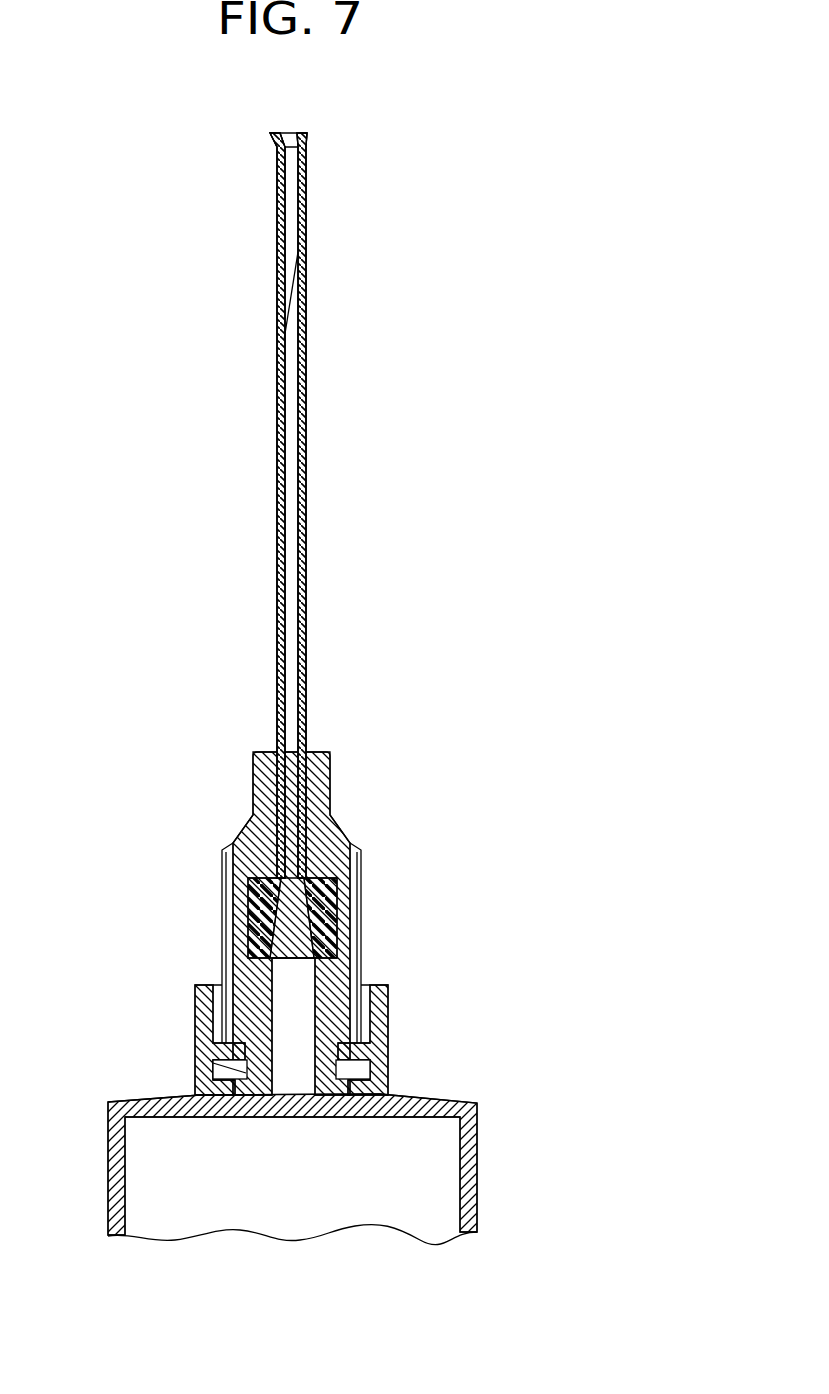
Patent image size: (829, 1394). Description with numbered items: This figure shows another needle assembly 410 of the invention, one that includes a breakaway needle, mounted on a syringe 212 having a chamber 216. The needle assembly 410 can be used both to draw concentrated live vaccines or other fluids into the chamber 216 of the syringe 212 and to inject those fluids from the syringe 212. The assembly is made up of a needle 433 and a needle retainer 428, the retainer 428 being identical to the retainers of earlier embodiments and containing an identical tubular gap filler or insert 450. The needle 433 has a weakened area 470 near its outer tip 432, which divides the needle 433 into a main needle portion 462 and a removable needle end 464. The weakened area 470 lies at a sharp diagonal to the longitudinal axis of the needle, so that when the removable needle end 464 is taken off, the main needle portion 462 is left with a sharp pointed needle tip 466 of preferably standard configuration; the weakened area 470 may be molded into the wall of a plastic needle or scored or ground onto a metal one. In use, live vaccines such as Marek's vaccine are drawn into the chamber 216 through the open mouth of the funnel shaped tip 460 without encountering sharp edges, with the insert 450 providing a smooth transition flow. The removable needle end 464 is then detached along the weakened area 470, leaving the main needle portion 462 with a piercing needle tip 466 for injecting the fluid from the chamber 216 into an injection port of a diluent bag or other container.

The syringe 212 is at (96, 1224).
The chamber 216 is at (313, 1193).
The needle assembly 410 is at (273, 576).
The needle retainer 428 is at (241, 827).
The outer tip 432 is at (272, 149).
The needle 433 is at (278, 648).
The tubular gap filler or insert 450 is at (262, 910).
The funnel shaped tip 460 is at (326, 120).
The main needle portion 462 is at (291, 468).
The removable needle end 464 is at (277, 228).
The needle tip 466 is at (298, 257).
The weakened area 470 is at (293, 303).